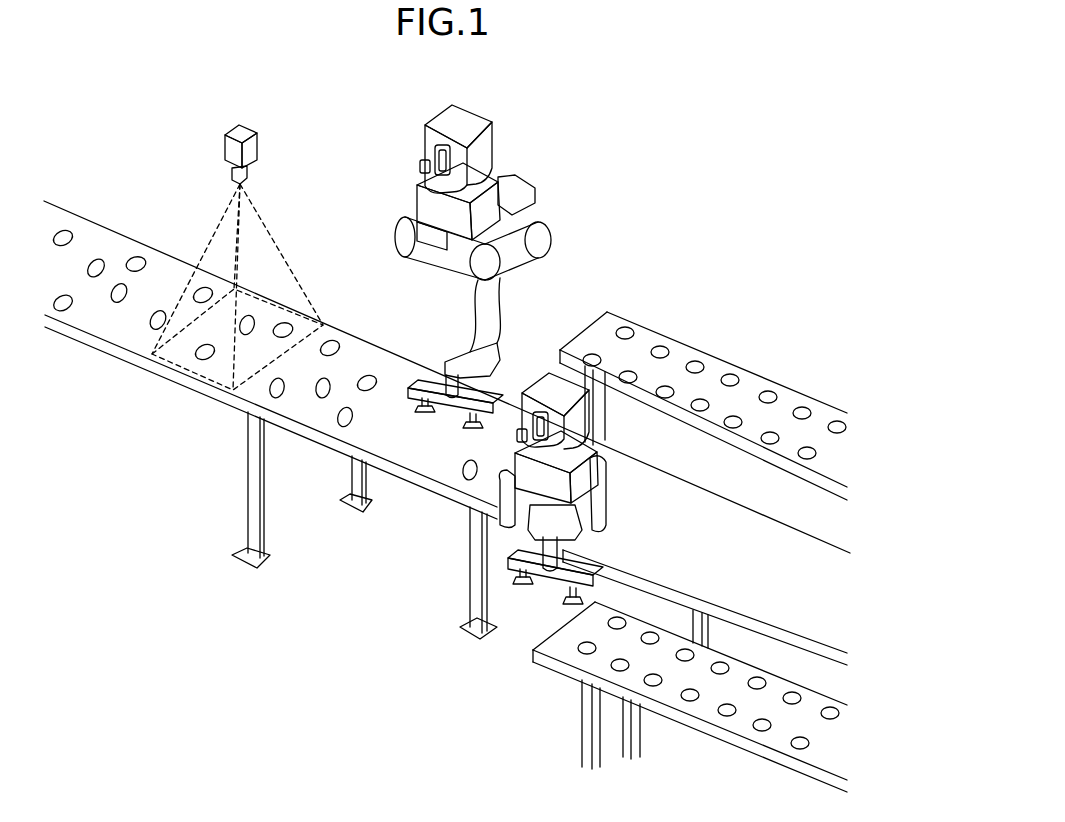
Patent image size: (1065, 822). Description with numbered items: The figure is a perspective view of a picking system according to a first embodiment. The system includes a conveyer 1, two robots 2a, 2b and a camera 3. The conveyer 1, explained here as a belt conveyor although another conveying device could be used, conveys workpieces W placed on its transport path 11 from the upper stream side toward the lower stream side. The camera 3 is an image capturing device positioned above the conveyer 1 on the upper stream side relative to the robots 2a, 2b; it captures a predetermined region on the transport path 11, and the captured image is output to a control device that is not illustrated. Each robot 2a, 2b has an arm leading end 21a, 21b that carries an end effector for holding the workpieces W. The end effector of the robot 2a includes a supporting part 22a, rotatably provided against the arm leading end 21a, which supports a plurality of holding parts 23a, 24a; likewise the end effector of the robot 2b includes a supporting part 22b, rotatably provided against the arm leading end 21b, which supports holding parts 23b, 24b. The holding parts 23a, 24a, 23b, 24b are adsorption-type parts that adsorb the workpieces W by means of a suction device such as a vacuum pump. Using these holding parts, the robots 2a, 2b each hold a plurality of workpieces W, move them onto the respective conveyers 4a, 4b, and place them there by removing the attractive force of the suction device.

The conveyer 1 is at (90, 206).
The transport path 11 is at (64, 220).
The workpiece W is at (137, 247).
The camera 3 is at (240, 129).
The robot 2a is at (459, 263).
The arm leading end 21a is at (453, 356).
The supporting part 22a is at (424, 385).
The holding part 23a is at (421, 412).
The holding part 24a is at (471, 429).
The robot 2b is at (506, 508).
The arm leading end 21b is at (546, 545).
The supporting part 22b is at (543, 583).
The holding part 23b is at (518, 581).
The holding part 24b is at (572, 606).
The conveyer 4a is at (658, 303).
The conveyer 4b is at (545, 688).